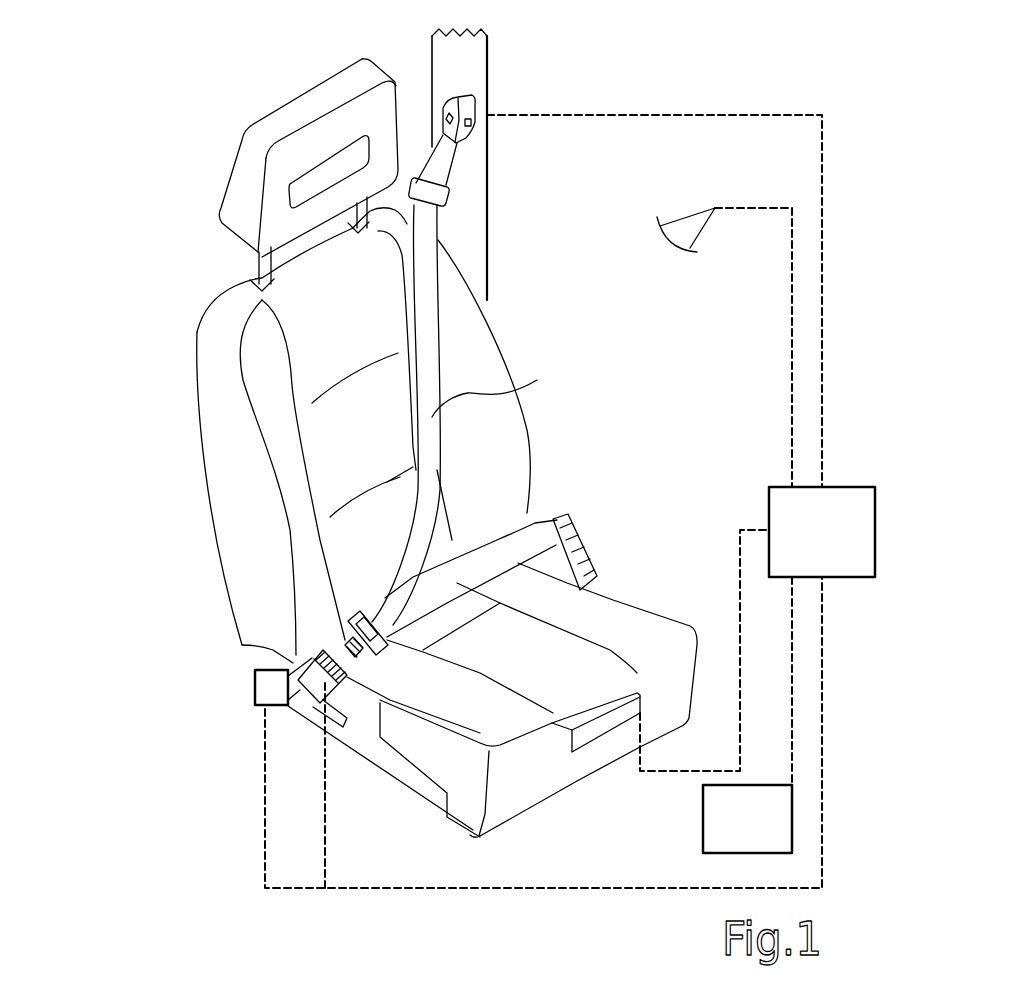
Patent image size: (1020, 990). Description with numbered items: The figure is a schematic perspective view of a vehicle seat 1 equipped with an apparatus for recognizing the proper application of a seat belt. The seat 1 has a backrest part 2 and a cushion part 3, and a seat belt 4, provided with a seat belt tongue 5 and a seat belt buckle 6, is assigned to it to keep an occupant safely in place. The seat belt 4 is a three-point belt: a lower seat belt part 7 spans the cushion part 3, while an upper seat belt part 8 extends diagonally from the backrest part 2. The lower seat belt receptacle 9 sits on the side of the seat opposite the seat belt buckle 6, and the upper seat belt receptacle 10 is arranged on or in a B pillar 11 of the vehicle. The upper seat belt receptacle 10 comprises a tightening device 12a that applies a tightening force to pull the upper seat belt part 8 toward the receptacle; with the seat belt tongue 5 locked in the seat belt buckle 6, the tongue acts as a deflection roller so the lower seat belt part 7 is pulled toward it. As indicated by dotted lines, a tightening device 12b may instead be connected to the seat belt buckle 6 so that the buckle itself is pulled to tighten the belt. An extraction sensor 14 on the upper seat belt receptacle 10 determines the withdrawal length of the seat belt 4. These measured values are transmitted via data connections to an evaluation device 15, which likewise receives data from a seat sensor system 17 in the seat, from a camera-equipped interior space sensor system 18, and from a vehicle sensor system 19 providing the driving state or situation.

The seat 1 is at (128, 290).
The backrest part 2 is at (207, 369).
The cushion part 3 is at (638, 612).
The seat belt 4 is at (366, 589).
The seat belt tongue 5 is at (377, 657).
The seat belt buckle 6 is at (303, 670).
The lower seat belt part 7 is at (500, 557).
The upper seat belt part 8 is at (432, 412).
The lower seat belt receptacle 9 is at (582, 567).
The upper seat belt receptacle 10 is at (448, 86).
The B pillar 11 is at (458, 67).
The tightening device 12a is at (467, 106).
The tightening device 12b is at (258, 684).
The extraction sensor 14 is at (470, 126).
The evaluation device 15 is at (833, 493).
The seat sensor system 17 is at (557, 743).
The interior space sensor system 18 is at (690, 225).
The vehicle sensor system 19 is at (712, 806).